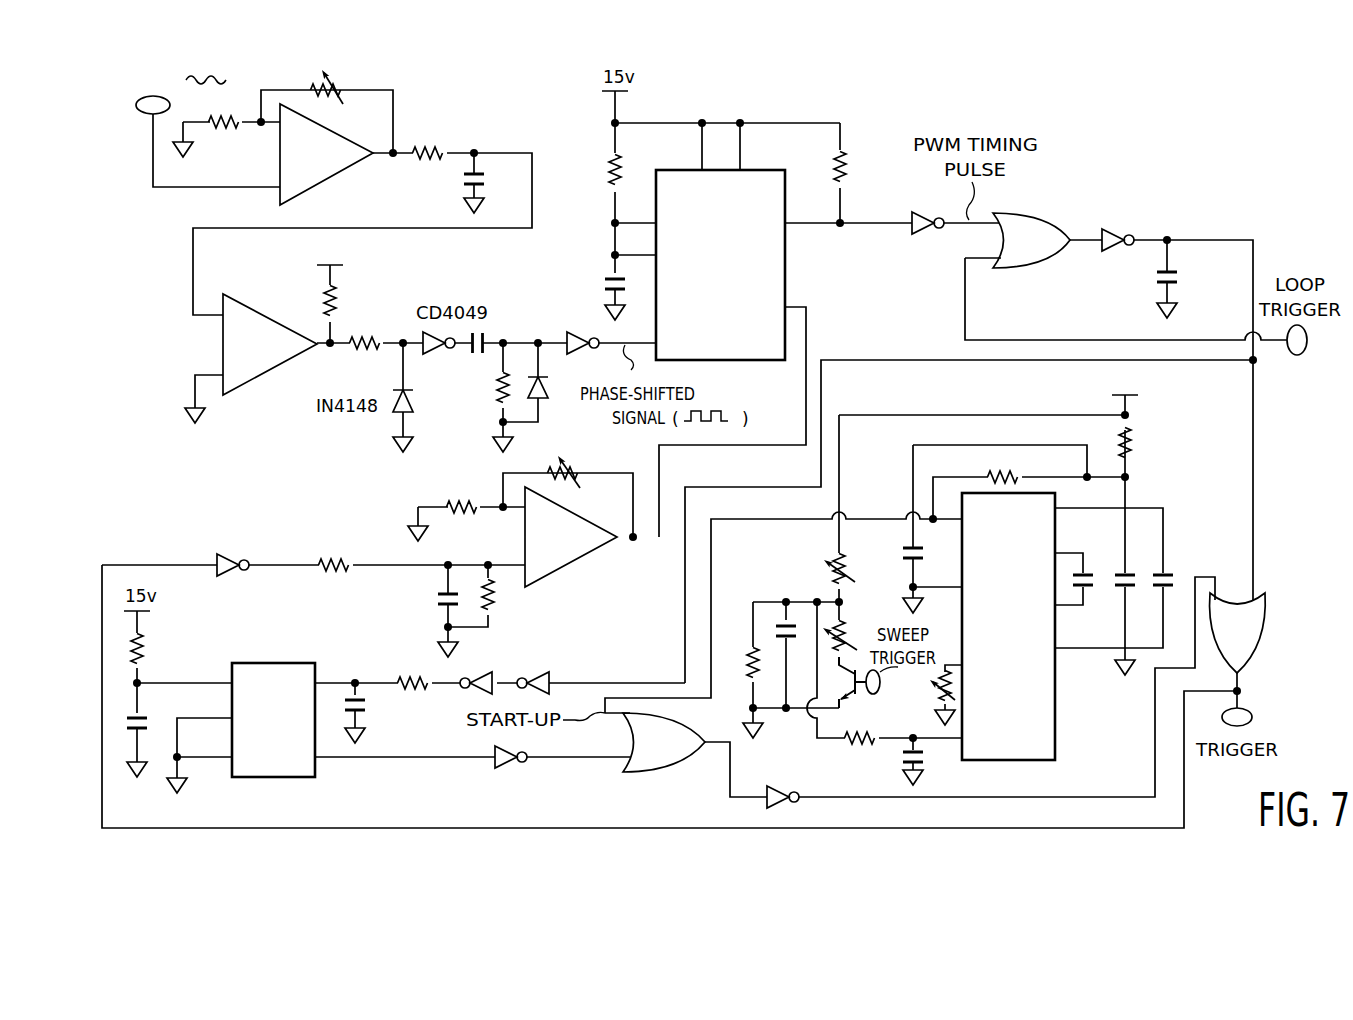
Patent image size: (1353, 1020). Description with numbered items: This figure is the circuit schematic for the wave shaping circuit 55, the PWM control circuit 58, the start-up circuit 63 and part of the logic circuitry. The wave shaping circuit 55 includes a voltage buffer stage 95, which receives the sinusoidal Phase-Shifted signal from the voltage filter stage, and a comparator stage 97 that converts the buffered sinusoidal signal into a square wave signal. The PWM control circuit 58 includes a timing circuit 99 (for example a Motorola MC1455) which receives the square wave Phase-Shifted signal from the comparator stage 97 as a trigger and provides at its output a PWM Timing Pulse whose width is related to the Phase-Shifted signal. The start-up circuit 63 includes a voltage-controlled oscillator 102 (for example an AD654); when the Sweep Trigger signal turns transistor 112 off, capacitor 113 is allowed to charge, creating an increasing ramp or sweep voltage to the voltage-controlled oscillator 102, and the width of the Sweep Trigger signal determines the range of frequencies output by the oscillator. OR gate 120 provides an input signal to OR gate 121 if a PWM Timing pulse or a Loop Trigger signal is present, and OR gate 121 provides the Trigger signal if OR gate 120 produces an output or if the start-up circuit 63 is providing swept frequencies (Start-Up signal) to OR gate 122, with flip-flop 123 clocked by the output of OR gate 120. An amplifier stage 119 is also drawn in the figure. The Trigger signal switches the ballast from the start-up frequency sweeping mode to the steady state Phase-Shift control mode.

The wave shaping circuit 55 is at (507, 112).
The voltage buffer stage 95 is at (420, 125).
The comparator stage 97 is at (375, 296).
The timing circuit 99 is at (787, 271).
The PWM control circuit 58 is at (869, 146).
The OR gate 120 is at (1052, 228).
The start-up circuit 63 is at (906, 394).
The amplifier LM358 119 is at (422, 487).
The flip-flop 123 is at (312, 663).
The capacitor 113 is at (778, 622).
The transistor 112 is at (859, 697).
The OR gate 122 is at (684, 762).
The voltage-controlled oscillator 102 is at (1058, 742).
The OR gate 121 is at (1245, 656).